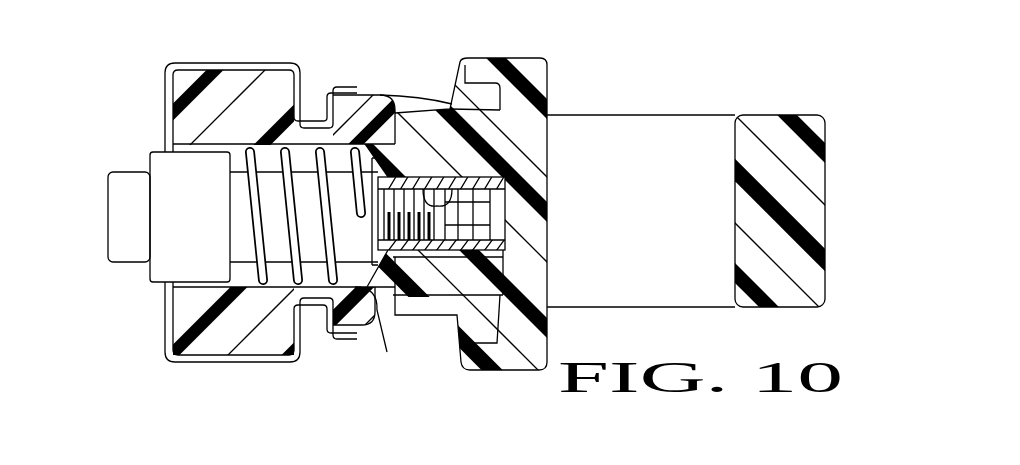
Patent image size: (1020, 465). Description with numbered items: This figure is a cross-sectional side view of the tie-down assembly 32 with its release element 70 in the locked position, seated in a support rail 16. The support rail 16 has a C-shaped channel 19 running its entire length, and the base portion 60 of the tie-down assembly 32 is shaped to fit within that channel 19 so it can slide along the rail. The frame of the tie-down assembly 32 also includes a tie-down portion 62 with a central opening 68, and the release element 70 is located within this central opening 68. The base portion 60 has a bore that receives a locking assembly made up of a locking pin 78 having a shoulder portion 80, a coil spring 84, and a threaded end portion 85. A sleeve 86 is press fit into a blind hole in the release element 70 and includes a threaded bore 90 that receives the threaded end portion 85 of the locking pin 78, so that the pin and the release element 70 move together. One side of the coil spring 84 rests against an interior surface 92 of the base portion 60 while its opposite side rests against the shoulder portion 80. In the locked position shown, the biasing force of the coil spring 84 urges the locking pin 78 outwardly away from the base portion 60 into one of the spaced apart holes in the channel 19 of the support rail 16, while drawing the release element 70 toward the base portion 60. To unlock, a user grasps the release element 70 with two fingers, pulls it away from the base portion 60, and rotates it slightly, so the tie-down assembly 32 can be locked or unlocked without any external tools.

The support rail 16 is at (158, 313).
The channel 19 is at (210, 112).
The tie-down assembly 32 is at (442, 50).
The base portion 60 is at (250, 83).
The tie-down portion 62 is at (778, 123).
The central opening 68 is at (703, 147).
The release element 70 is at (537, 166).
The locking pin 78 is at (240, 270).
The shoulder portion 80 is at (170, 168).
The coil spring 84 is at (254, 215).
The threaded end portion 85 is at (495, 232).
The sleeve 86 is at (470, 180).
The threaded bore 90 is at (500, 196).
The interior surface 92 is at (438, 232).